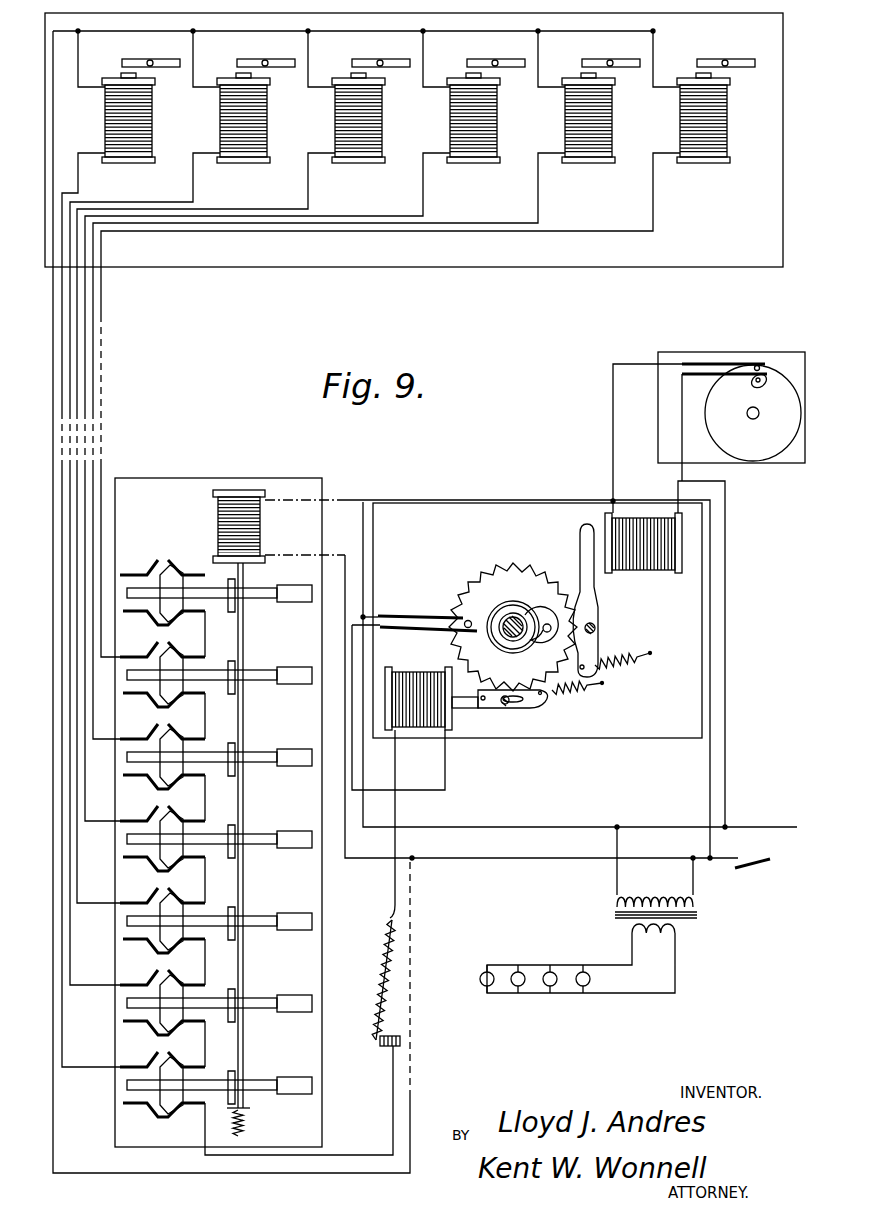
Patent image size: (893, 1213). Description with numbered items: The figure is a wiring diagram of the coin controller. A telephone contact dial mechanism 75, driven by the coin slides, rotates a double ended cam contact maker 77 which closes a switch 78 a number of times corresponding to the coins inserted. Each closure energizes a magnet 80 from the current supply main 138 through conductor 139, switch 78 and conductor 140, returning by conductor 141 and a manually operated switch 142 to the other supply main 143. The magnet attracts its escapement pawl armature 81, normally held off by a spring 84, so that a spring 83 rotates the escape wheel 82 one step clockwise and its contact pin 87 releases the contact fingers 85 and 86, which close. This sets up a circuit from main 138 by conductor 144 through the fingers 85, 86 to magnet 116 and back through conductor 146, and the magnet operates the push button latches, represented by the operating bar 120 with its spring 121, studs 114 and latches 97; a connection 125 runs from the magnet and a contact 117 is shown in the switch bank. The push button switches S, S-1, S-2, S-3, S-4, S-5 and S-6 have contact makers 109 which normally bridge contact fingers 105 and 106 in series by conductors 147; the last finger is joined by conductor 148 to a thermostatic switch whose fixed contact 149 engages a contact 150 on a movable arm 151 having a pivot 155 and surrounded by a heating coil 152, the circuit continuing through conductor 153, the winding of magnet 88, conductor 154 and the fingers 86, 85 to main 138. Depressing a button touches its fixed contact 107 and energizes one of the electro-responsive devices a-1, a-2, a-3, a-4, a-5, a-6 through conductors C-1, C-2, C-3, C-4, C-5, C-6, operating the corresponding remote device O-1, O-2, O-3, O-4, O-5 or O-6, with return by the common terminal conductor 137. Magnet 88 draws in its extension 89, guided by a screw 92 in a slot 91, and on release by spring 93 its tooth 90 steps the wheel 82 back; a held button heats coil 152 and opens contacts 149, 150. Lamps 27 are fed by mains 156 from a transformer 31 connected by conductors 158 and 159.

The remote device O-1 is at (708, 60).
The remote device O-2 is at (593, 60).
The remote device O-3 is at (478, 60).
The remote device O-4 is at (363, 60).
The remote device O-5 is at (248, 60).
The remote device O-6 is at (133, 60).
The electro-responsive device a-1 is at (720, 109).
The electro-responsive device a-2 is at (605, 109).
The electro-responsive device a-3 is at (490, 109).
The electro-responsive device a-4 is at (375, 109).
The electro-responsive device a-5 is at (260, 109).
The electro-responsive device a-6 is at (145, 109).
The conductor C-1 is at (655, 191).
The conductor C-2 is at (540, 191).
The conductor C-3 is at (425, 191).
The conductor C-4 is at (310, 191).
The conductor C-5 is at (195, 191).
The conductor C-6 is at (80, 181).
The common terminal conductor 137 is at (79, 34).
The magnet 116 is at (240, 505).
The operating bar 120 is at (243, 705).
The spring 121 is at (245, 1122).
The fixed switch contact 107 is at (133, 573).
The contact finger 106 is at (193, 573).
The conductors 147 is at (207, 950).
The conductor 148 is at (393, 1106).
The contact finger 105 is at (188, 694).
The contact maker 109 is at (166, 683).
The contact 117 is at (206, 792).
The latch 97 is at (233, 604).
The stud 114 is at (236, 780).
The push button switch S is at (295, 604).
The push button switch S-1 is at (292, 686).
The push button switch S-2 is at (291, 768).
The push button switch S-3 is at (291, 850).
The push button switch S-4 is at (291, 932).
The push button switch S-5 is at (291, 1014).
The push button switch S-6 is at (291, 1096).
The conductor 125 is at (345, 500).
The conductor 141 is at (710, 763).
The current supply main 138 is at (755, 826).
The conductor 144 is at (560, 822).
The conductor 146 is at (505, 860).
The contact finger 85 is at (390, 614).
The contact finger 86 is at (430, 626).
The contact pin 87 is at (470, 619).
The conductor 154 is at (447, 800).
The escape wheel 82 is at (540, 592).
The spring 83 is at (515, 605).
The armature 81 is at (590, 599).
The spring 84 is at (608, 664).
The magnet 80 is at (660, 555).
The conductor 140 is at (612, 411).
The conductor 139 is at (727, 600).
The magnet 88 is at (420, 700).
The slot 91 is at (512, 706).
The extension 89 is at (530, 706).
The screw 92 is at (503, 703).
The tooth 90 is at (503, 687).
The spring 93 is at (575, 694).
The telephone contact dial mechanism 75 is at (768, 446).
The cam contact maker 77 is at (754, 387).
The switch 78 is at (720, 362).
The conductor 153 is at (395, 876).
The pivot 155 is at (396, 911).
The movable arm 151 is at (382, 1018).
The heating coil 152 is at (392, 966).
The contact 150 is at (392, 1040).
The fixed contact 149 is at (392, 1047).
The transformer 31 is at (680, 915).
The conductor 158 is at (615, 880).
The conductor 159 is at (694, 880).
The supply mains 156 is at (607, 964).
The electric lamps 27 is at (550, 988).
The manually operated switch 142 is at (755, 872).
The supply main 143 is at (788, 862).